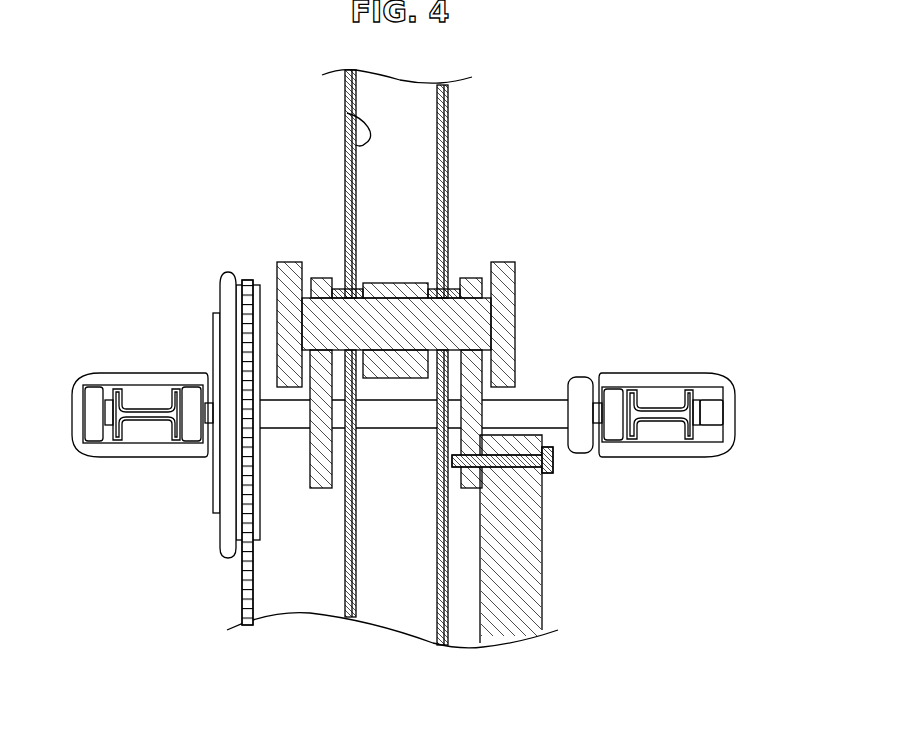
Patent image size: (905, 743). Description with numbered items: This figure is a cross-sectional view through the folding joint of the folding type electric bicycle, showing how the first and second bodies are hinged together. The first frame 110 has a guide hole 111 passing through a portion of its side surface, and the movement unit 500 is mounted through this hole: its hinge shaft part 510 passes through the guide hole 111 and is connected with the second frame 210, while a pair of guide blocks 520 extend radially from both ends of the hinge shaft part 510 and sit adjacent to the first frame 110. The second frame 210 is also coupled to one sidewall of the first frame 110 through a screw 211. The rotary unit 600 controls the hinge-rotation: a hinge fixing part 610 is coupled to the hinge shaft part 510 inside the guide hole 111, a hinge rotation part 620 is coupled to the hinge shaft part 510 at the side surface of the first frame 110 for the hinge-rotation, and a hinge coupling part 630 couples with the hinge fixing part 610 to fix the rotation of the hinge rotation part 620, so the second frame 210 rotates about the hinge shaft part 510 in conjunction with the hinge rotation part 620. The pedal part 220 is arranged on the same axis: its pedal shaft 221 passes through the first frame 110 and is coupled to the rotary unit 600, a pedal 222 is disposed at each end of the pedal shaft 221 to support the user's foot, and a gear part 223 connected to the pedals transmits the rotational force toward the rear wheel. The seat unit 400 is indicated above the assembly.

The first frame 110 is at (347, 160).
The guide hole 111 is at (347, 113).
The second frame 210 is at (517, 593).
The screw 211 is at (560, 467).
The pedal part 220 is at (398, 426).
The pedal shaft 221 is at (273, 410).
The pedal 222 is at (399, 379).
The gear part 223 is at (246, 280).
The seat unit 400 is at (268, 239).
The movement unit 500 is at (468, 324).
The hinge shaft part 510 is at (460, 323).
The guide blocks 520 is at (517, 272).
The rotary unit 600 is at (458, 309).
The hinge fixing part 610 is at (397, 285).
The hinge rotation part 620 is at (470, 280).
The hinge coupling part 630 is at (357, 290).